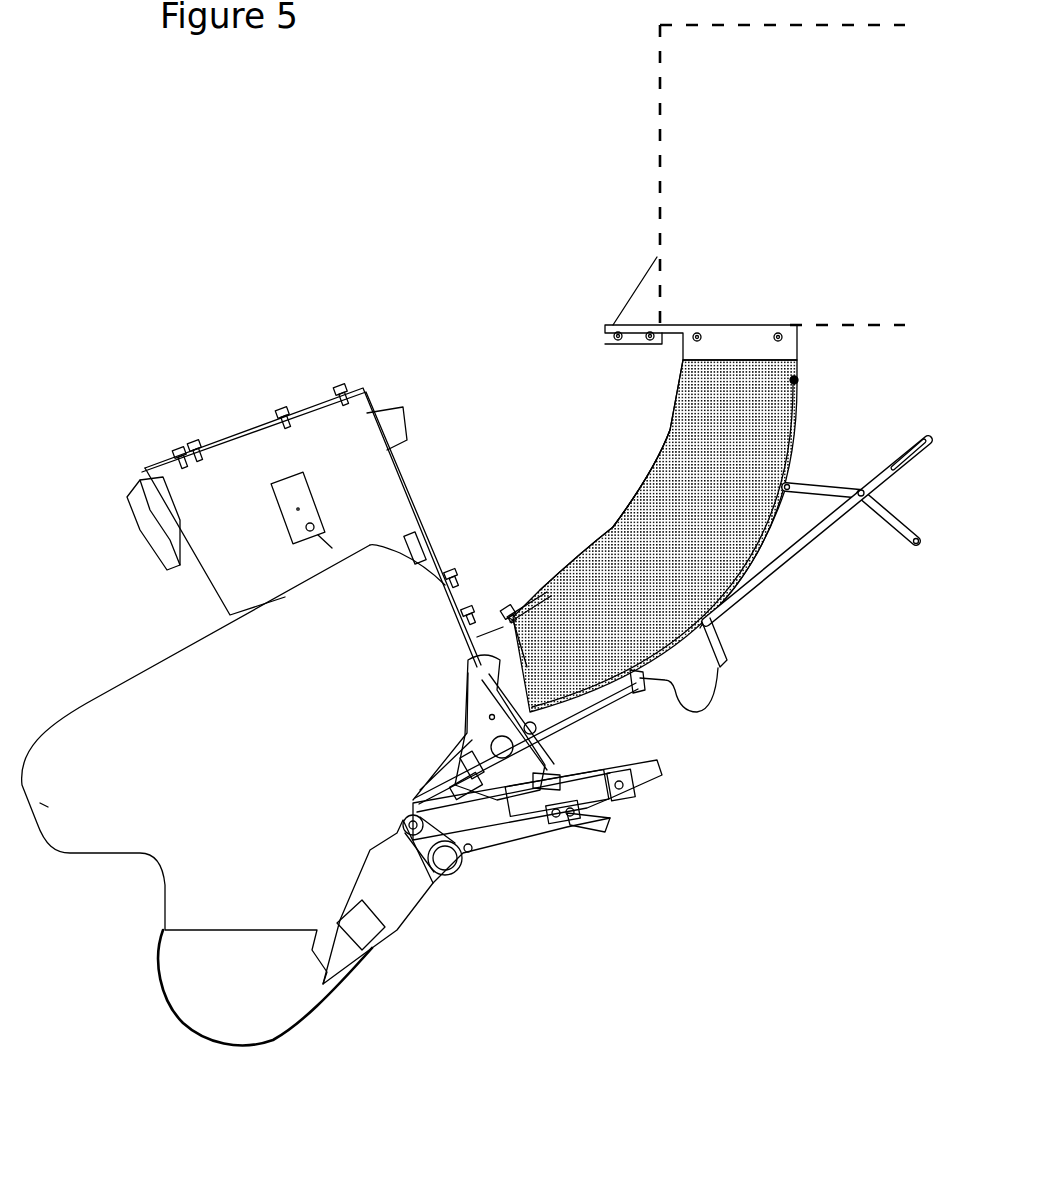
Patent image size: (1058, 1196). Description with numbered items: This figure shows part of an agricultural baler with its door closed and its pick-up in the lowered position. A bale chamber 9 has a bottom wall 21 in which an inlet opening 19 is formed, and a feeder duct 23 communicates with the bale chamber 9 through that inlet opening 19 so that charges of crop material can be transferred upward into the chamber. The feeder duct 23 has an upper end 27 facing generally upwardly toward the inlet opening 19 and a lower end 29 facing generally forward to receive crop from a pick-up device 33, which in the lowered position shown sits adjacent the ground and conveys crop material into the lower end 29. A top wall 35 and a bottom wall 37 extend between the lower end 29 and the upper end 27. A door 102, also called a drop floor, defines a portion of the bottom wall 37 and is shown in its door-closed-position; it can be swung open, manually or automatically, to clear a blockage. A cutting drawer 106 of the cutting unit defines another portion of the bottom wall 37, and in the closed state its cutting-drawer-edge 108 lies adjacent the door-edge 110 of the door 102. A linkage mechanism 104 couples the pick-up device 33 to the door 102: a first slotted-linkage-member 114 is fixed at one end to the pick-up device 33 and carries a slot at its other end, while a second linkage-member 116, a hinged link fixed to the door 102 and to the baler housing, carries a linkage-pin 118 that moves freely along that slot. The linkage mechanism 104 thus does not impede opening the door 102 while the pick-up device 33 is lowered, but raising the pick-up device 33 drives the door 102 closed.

The bale chamber 9 is at (657, 170).
The inlet opening 19 is at (731, 305).
The bottom wall 21 is at (853, 327).
The feeder duct 23 is at (660, 523).
The upper end 27 is at (715, 397).
The lower end 29 is at (506, 606).
The pick-up device 33 is at (135, 672).
The top wall 35 is at (659, 454).
The bottom wall 37 is at (733, 584).
The door 102 is at (754, 556).
The linkage mechanism 104 is at (882, 548).
The cutting drawer 106 is at (645, 662).
The cutting-drawer-edge 108 is at (719, 628).
The door-edge 110 is at (695, 645).
The first slotted-linkage-member 114 is at (815, 540).
The second linkage-member 116 is at (813, 480).
The linkage-pin 118 is at (863, 489).